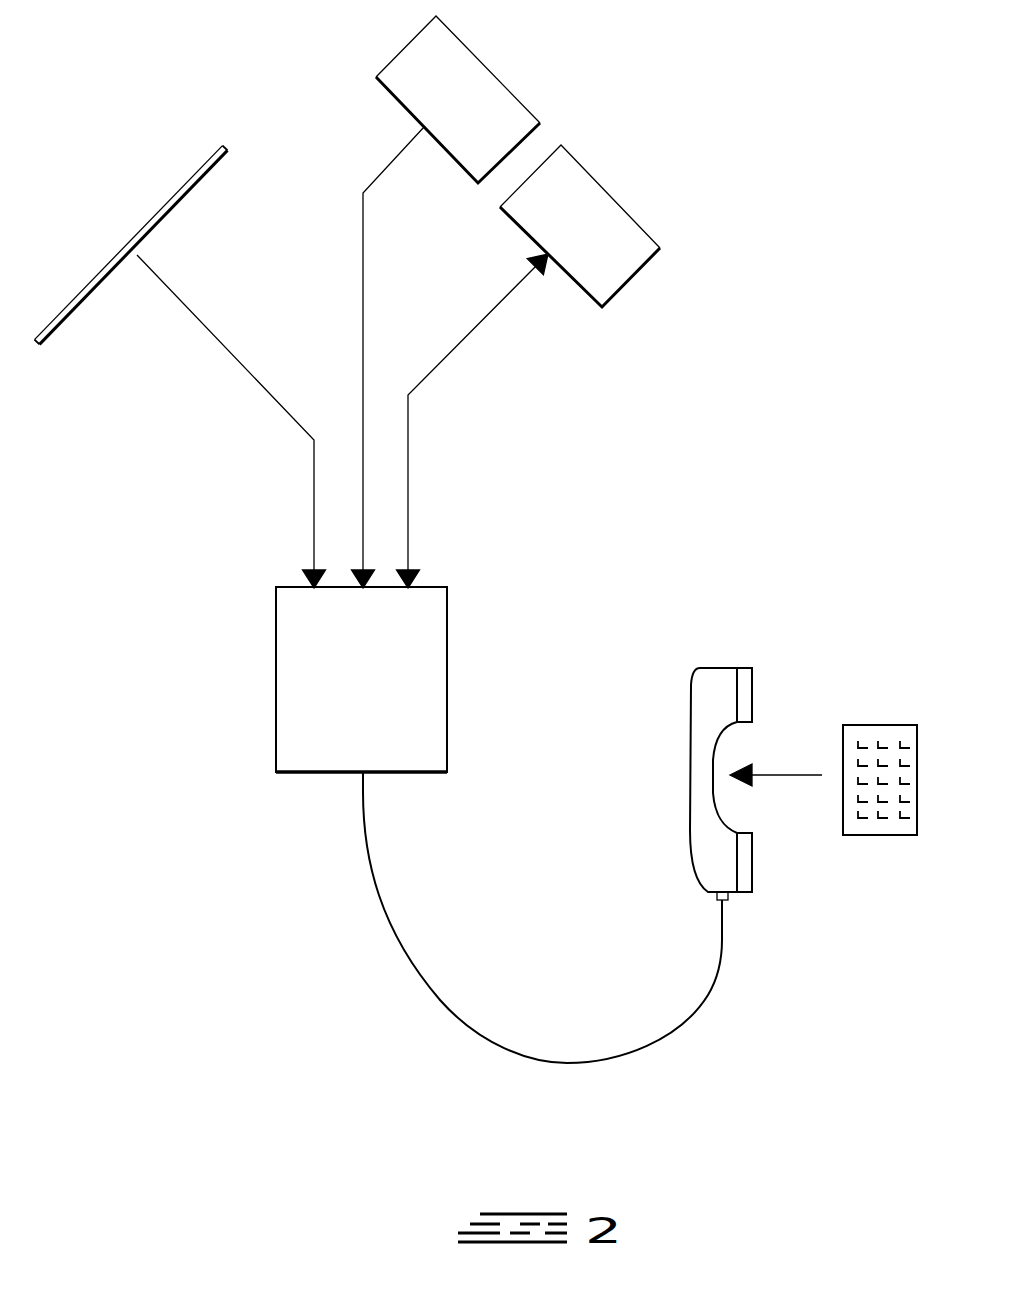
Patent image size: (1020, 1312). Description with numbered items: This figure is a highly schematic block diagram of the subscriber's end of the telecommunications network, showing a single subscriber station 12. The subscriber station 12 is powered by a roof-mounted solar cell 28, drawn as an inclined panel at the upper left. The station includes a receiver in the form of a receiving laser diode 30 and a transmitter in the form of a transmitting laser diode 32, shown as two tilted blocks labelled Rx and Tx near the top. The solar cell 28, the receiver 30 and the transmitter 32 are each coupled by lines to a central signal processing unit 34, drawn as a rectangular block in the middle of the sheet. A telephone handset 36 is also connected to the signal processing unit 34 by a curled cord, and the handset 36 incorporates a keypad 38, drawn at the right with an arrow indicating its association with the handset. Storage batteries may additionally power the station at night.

The subscriber station 12 is at (695, 322).
The solar cell 28 is at (148, 220).
The receiving laser diode 30 is at (485, 65).
The transmitting laser diode 32 is at (607, 187).
The central signal processing unit 34 is at (274, 673).
The telephone handset 36 is at (715, 660).
The keypad 38 is at (883, 725).